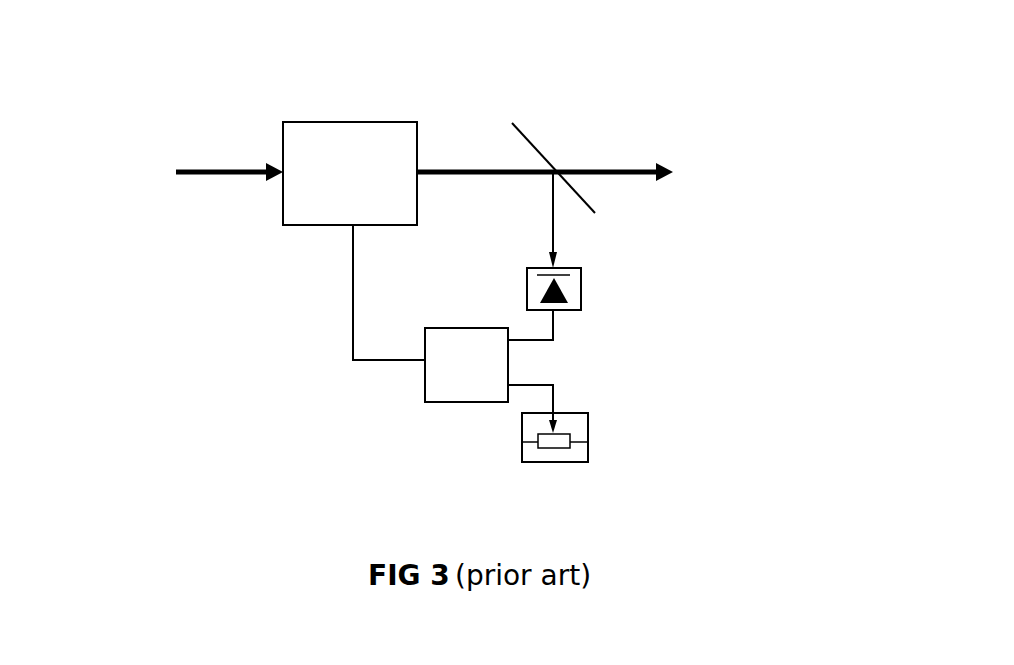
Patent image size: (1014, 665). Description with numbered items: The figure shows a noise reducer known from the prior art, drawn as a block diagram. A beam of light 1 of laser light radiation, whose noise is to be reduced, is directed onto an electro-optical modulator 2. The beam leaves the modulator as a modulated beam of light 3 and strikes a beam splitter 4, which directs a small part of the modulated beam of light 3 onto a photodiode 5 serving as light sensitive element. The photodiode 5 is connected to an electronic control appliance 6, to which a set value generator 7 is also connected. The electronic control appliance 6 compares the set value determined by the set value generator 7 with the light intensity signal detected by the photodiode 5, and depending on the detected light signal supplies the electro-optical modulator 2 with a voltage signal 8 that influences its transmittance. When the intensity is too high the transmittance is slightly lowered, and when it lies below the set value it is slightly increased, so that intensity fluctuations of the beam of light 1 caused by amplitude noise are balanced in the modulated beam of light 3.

The beam of light 1 is at (203, 168).
The electro-optical modulator 2 is at (362, 135).
The modulated beam of light 3 is at (463, 168).
The beam splitter 4 is at (530, 137).
The photodiode 5 is at (583, 288).
The electronic control appliance 6 is at (437, 390).
The set value generator 7 is at (590, 420).
The voltage signal 8 is at (350, 293).